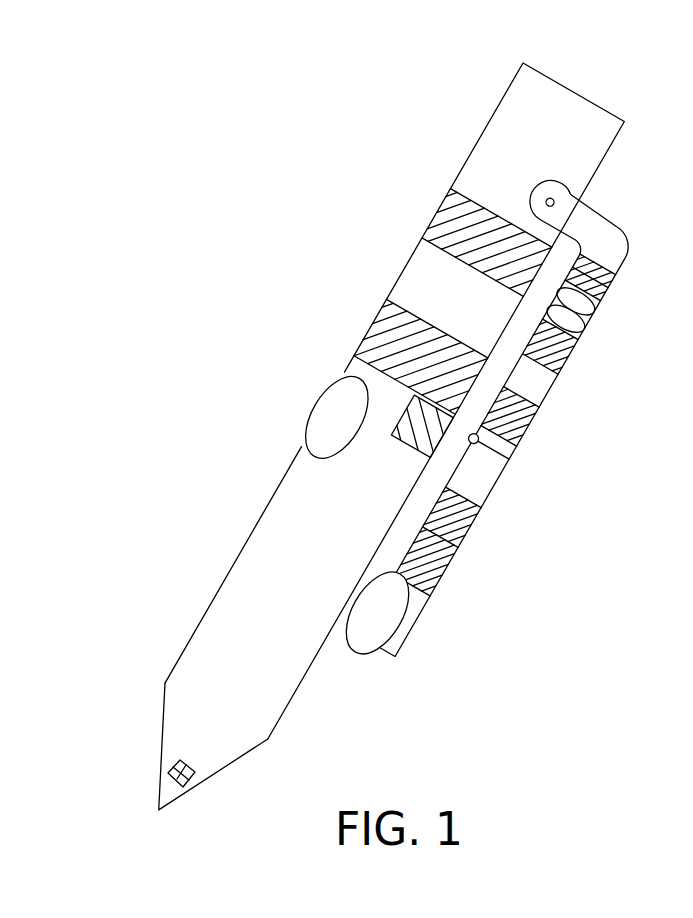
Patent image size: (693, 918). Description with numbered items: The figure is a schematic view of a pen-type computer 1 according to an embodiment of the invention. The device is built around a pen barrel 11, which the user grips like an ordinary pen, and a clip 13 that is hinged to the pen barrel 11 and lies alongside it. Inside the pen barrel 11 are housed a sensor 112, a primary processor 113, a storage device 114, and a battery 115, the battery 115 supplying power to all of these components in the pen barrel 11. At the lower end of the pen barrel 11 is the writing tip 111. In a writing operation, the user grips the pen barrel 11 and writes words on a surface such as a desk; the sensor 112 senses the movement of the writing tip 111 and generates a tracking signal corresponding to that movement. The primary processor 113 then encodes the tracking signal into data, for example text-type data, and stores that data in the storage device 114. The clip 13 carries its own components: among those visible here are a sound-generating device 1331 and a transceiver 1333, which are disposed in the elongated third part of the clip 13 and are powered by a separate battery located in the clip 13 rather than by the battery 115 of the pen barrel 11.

The pen-type computer 1 is at (137, 126).
The pen barrel 11 is at (590, 70).
The writing tip 111 is at (162, 796).
The sensor 112 is at (163, 767).
The primary processor 113 is at (404, 438).
The storage device 114 is at (372, 323).
The battery 115 is at (445, 212).
The clip 13 is at (547, 477).
The sound-generating device 1331 is at (392, 618).
The transceiver 1333 is at (470, 530).